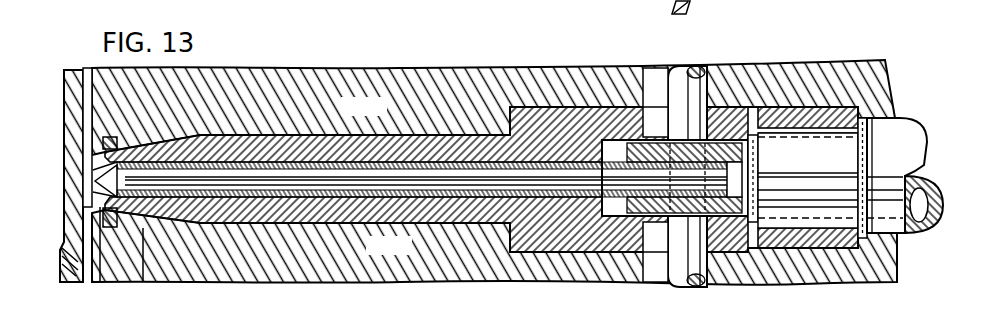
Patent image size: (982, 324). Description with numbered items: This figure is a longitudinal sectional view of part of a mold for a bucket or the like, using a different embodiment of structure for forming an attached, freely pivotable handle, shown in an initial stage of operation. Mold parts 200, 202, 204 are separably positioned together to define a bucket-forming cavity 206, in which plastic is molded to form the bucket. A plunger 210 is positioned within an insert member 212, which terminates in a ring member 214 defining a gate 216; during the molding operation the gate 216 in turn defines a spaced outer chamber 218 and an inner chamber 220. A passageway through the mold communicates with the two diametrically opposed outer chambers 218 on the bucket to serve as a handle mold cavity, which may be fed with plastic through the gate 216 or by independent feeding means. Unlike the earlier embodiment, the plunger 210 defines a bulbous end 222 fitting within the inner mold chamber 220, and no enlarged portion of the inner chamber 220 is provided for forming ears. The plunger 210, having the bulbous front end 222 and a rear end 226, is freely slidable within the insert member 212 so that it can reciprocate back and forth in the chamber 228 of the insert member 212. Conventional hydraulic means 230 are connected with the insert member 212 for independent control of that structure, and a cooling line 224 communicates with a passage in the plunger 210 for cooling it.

The mold part 200 is at (385, 116).
The mold part 202 is at (410, 255).
The mold part 204 is at (72, 85).
The bucket-forming cavity 206 is at (90, 68).
The plunger 210 is at (532, 170).
The insert member 212 is at (432, 143).
The ring member 214 is at (140, 160).
The gate 216 is at (145, 228).
The outer chamber 218 is at (117, 140).
The inner chamber 220 is at (98, 280).
The bulbous end 222 is at (66, 195).
The cooling line 224 is at (693, 72).
The rear end 226 is at (733, 147).
The chamber 228 is at (612, 147).
The hydraulic means 230 is at (887, 133).